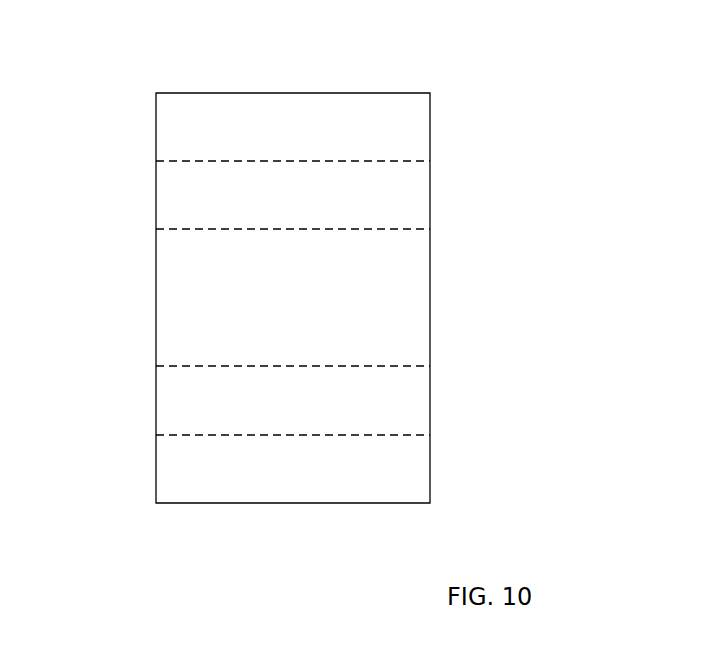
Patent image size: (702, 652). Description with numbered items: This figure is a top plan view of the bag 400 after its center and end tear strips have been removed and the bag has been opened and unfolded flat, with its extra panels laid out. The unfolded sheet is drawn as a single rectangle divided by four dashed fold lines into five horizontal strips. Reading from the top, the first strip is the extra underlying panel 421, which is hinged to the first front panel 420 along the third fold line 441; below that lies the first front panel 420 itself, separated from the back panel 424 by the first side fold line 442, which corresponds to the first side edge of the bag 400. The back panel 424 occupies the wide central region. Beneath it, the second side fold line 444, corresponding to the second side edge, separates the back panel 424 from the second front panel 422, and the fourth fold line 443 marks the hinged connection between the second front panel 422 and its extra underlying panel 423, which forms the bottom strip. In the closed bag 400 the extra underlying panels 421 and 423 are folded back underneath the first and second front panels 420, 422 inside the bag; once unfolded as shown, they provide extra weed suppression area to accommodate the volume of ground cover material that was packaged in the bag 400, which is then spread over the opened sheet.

The bag 400 is at (468, 110).
The first front panel 420 is at (395, 191).
The extra underlying panel 421 is at (299, 112).
The second front panel 422 is at (407, 401).
The extra underlying panel 423 is at (303, 480).
The back panel 424 is at (400, 287).
The third fold line 441 is at (185, 161).
The first side fold line 442 is at (195, 229).
The fourth fold line 443 is at (195, 435).
The second side fold line 444 is at (193, 366).